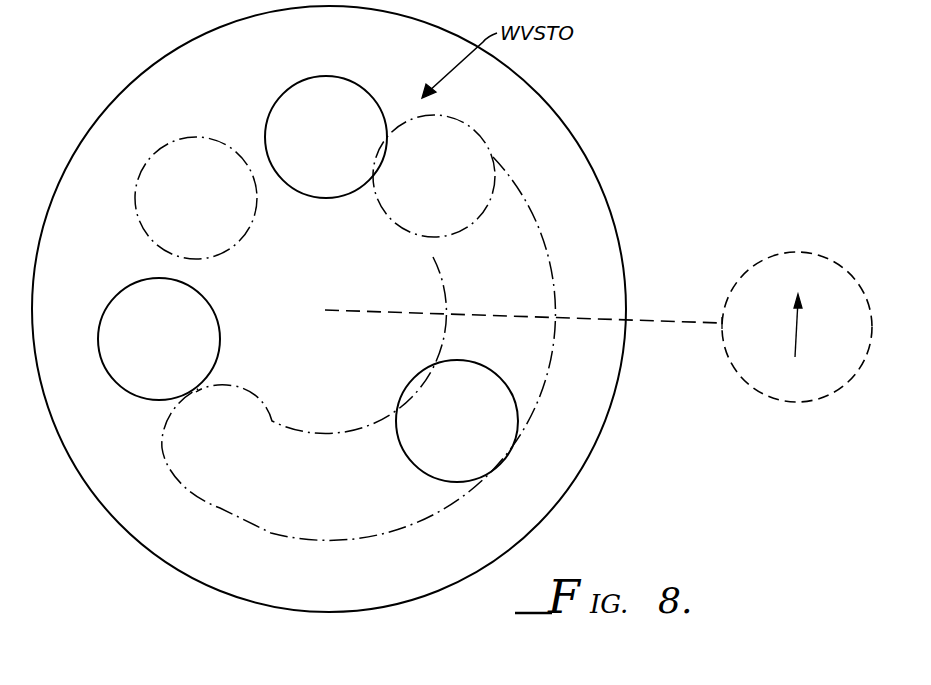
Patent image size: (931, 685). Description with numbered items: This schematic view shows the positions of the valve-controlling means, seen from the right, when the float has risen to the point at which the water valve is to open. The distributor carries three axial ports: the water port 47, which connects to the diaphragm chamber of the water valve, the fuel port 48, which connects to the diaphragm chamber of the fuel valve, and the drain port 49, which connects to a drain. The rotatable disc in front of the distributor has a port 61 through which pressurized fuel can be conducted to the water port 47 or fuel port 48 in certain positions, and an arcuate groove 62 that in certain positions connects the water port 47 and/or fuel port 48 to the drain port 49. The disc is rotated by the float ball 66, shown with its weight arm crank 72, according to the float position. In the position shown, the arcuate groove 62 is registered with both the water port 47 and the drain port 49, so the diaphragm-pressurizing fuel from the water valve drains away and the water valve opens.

The axial port 47 is at (369, 94).
The axial port 48 is at (128, 383).
The axial port 49 is at (492, 376).
The port 61 is at (176, 143).
The arcuate groove 62 is at (405, 520).
The float ball 66 is at (815, 252).
The weight arm crank 72 is at (694, 324).